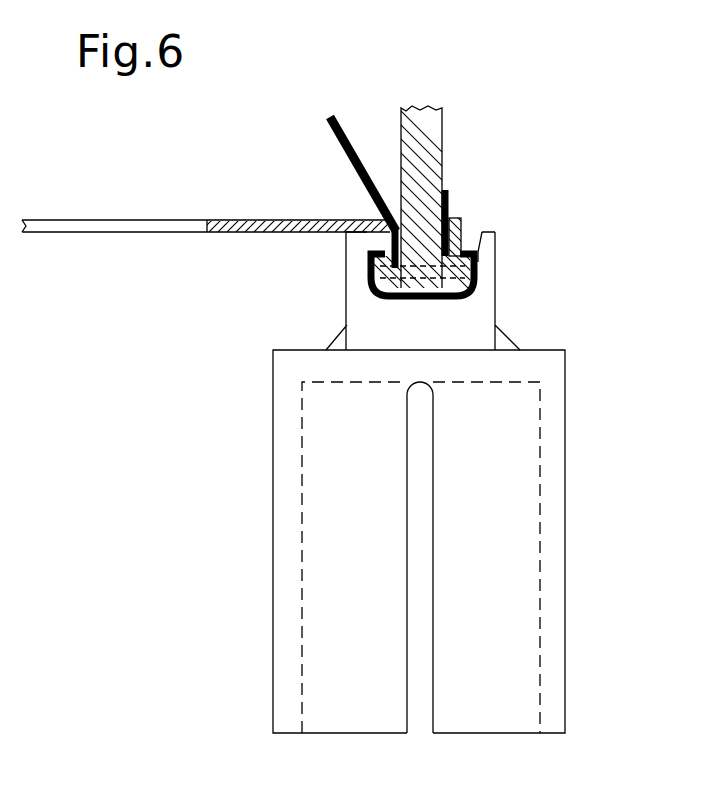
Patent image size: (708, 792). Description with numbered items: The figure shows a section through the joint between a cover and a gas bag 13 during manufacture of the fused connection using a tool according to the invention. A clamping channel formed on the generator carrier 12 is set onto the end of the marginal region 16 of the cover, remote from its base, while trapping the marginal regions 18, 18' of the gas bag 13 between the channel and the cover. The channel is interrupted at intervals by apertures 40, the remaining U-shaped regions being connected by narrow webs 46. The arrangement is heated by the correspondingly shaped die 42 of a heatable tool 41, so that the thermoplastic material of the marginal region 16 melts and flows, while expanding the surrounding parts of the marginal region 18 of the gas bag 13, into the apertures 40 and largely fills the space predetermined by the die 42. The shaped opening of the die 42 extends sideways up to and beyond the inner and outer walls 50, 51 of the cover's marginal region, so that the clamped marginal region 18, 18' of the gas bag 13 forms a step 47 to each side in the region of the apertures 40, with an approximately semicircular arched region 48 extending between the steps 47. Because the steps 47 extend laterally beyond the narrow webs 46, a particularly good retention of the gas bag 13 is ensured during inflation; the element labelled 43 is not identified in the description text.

The generator carrier 12 is at (233, 215).
The gas bag 13 is at (340, 138).
The marginal region of the cover 16 is at (418, 196).
The marginal region of the gas bag 18 is at (321, 253).
The marginal region of the gas bag 18' is at (492, 192).
The aperture 40 is at (433, 300).
The heatable tool 41 is at (565, 470).
The die 42 is at (370, 313).
The plate surface 43 is at (118, 232).
The narrow web 46 is at (468, 226).
The step 47 is at (480, 265).
The arched region 48 is at (393, 298).
The inner wall of the marginal region of the cover 50 is at (395, 125).
The outer wall of the marginal region of the cover 51 is at (443, 115).